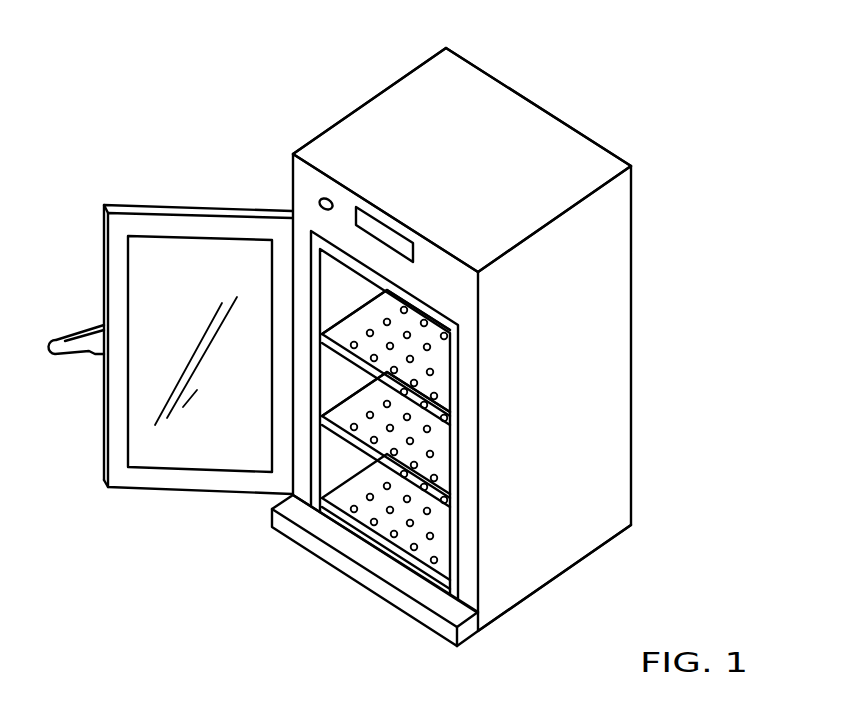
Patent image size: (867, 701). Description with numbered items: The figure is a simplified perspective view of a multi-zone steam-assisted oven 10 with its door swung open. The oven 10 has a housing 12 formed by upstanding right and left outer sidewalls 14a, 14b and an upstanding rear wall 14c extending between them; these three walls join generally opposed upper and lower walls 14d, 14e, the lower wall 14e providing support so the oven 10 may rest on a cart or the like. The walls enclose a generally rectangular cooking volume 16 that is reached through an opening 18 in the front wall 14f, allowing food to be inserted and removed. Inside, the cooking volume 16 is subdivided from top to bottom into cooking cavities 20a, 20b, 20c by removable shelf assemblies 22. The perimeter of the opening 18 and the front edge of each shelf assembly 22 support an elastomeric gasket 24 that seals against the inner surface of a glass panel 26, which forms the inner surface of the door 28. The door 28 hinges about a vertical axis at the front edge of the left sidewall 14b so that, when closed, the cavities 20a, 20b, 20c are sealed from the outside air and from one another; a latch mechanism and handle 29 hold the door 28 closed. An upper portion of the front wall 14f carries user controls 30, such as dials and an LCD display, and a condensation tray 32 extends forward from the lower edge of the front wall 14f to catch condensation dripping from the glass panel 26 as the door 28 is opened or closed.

The multi-zone steam-assisted oven 10 is at (663, 59).
The housing 12 is at (631, 290).
The right outer sidewall 14a is at (607, 376).
The left outer sidewall 14b is at (326, 117).
The rear wall 14c is at (579, 114).
The upper wall 14d is at (413, 91).
The lower wall 14e is at (598, 559).
The front wall 14f is at (303, 182).
The cooking volume 16 is at (320, 568).
The opening 18 is at (461, 592).
The cooking cavity 20a is at (449, 386).
The cooking cavity 20b is at (448, 467).
The cooking cavity 20c is at (442, 546).
The shelf assemblies 22 is at (415, 413).
The elastomeric gasket 24 is at (398, 380).
The glass panel 26 is at (177, 452).
The door 28 is at (132, 210).
The handle 29 is at (65, 340).
The user controls 30 is at (381, 221).
The condensation tray 32 is at (431, 629).